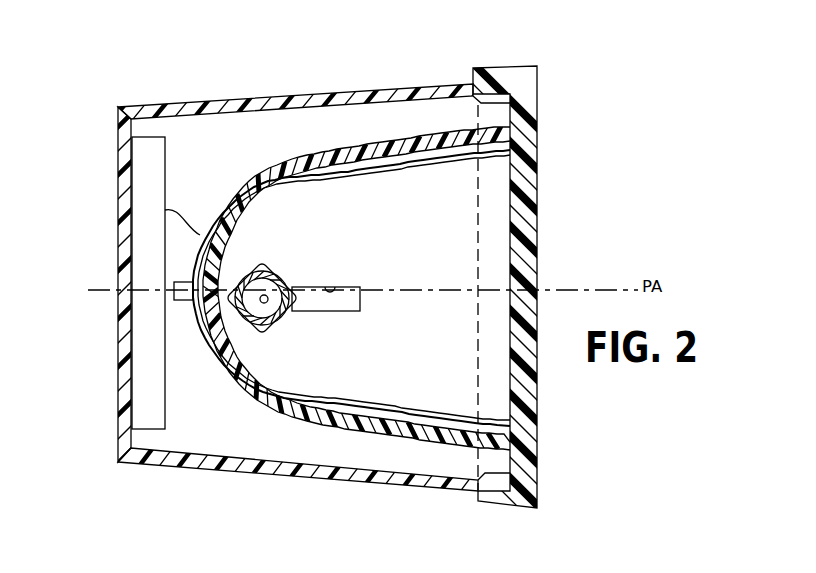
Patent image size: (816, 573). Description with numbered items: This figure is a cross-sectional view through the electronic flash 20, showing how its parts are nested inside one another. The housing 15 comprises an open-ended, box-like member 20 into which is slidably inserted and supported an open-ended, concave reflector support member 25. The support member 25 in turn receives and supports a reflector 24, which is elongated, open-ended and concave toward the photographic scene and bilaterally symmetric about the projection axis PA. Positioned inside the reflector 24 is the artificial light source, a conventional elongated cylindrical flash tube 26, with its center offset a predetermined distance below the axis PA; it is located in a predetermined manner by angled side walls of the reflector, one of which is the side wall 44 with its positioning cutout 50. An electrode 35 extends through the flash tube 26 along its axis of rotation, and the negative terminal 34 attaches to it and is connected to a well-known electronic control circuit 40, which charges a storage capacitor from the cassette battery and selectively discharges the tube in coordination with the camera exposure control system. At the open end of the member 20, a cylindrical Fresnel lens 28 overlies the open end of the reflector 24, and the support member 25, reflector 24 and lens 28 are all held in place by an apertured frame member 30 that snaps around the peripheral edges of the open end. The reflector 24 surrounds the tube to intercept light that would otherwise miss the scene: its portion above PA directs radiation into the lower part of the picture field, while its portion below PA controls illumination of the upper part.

The housing 15 is at (322, 88).
The electronic flash 20 is at (327, 277).
The reflector 24 is at (360, 184).
The reflector support member 25 is at (313, 163).
The flash tube 26 is at (272, 265).
The Fresnel lens 28 is at (537, 304).
The apertured frame member 30 is at (538, 120).
The negative terminal 34 is at (185, 220).
The electrode 35 is at (268, 302).
The electronic control circuit 40 is at (165, 174).
The side wall 44 is at (439, 261).
The positioning cutout 50 is at (332, 288).